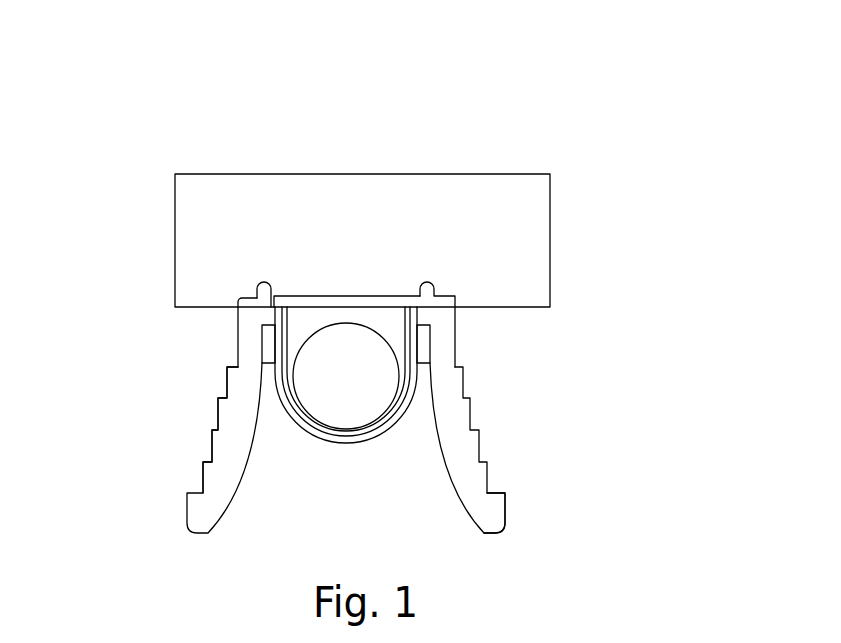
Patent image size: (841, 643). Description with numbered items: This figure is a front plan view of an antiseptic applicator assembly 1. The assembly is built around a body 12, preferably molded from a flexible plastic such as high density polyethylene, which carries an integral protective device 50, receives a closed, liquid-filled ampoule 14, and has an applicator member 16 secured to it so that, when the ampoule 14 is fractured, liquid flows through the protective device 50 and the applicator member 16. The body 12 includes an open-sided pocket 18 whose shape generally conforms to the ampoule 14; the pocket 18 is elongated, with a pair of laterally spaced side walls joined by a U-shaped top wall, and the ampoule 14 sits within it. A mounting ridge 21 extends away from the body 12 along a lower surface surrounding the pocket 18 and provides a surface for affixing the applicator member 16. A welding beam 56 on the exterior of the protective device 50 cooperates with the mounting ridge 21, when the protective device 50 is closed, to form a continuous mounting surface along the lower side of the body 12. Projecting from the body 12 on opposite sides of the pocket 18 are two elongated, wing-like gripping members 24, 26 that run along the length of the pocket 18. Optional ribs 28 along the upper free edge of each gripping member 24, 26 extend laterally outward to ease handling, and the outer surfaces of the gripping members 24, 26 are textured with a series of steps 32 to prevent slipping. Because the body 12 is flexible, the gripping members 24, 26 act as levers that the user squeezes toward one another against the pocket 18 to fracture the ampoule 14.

The antiseptic applicator assembly 1 is at (197, 110).
The body 12 is at (283, 410).
The ampoule 14 is at (367, 390).
The applicator member 16 is at (343, 212).
The pocket 18 is at (387, 320).
The mounting ridge 21 is at (257, 288).
The gripping member 24 is at (218, 472).
The gripping member 26 is at (472, 473).
The rib 28 is at (487, 503).
The steps 32 is at (222, 395).
The protective device 50 is at (350, 299).
The welding beam 56 is at (435, 289).